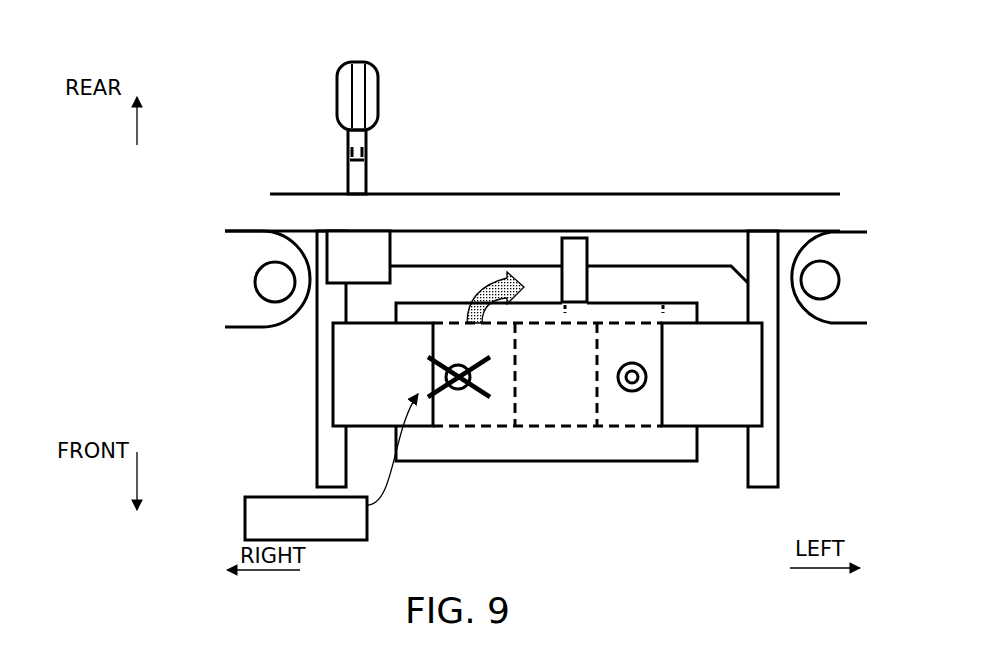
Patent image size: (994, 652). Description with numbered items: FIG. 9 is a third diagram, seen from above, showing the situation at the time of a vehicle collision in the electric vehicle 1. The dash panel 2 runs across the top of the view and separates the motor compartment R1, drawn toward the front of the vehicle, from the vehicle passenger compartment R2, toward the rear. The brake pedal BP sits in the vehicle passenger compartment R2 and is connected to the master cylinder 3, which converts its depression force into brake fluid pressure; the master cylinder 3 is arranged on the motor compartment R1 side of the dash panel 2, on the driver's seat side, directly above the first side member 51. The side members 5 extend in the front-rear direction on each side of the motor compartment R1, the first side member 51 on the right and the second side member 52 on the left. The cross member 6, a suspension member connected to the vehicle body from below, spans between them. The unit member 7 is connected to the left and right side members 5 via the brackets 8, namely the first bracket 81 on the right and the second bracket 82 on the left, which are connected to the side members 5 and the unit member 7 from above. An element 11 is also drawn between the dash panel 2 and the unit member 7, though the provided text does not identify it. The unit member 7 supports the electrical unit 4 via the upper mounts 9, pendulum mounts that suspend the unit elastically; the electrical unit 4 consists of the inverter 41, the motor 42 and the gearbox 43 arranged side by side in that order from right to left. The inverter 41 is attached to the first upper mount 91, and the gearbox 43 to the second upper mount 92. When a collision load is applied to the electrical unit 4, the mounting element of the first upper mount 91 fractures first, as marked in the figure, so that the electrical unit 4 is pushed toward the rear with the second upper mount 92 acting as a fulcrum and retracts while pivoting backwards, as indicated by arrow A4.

The electric vehicle 1 is at (243, 61).
The dash panel 2 is at (662, 193).
The master cylinder 3 is at (350, 257).
The electrical unit 4 is at (548, 457).
The inverter 41 is at (455, 426).
The motor 42 is at (533, 426).
The gearbox 43 is at (637, 485).
The side members 5 is at (535, 359).
The first side member 51 is at (317, 352).
The second side member 52 is at (778, 350).
The cross member 6 is at (712, 255).
The unit member 7 is at (697, 443).
The brackets 8 is at (538, 374).
The first bracket 81 is at (333, 377).
The second bracket 82 is at (762, 377).
The upper mounts 9 is at (565, 472).
The first upper mount 91 is at (455, 390).
The second upper mount 92 is at (640, 388).
The center tunnel member 11 is at (572, 270).
The arrow A4 is at (483, 278).
The brake pedal BP is at (358, 62).
The motor compartment R1 is at (260, 454).
The vehicle passenger compartment R2 is at (268, 143).